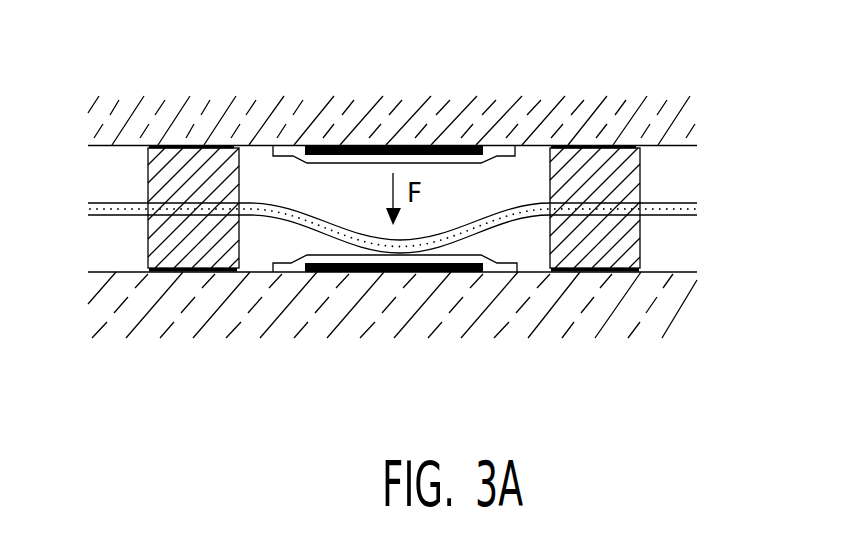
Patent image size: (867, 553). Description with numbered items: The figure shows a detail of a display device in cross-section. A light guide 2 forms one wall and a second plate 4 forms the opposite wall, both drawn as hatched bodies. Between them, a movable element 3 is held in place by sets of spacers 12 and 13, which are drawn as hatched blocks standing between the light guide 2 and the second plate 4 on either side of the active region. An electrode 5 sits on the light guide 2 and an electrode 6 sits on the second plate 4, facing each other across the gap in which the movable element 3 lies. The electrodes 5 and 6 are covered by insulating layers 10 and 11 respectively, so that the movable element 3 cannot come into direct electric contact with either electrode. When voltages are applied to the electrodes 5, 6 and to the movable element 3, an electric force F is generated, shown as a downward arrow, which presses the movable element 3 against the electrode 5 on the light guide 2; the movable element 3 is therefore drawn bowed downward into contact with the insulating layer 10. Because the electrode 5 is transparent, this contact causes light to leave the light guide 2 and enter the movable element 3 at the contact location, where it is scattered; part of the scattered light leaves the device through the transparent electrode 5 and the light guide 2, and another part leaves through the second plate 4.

The light guide 2 is at (223, 322).
The movable element 3 is at (672, 203).
The second plate 4 is at (198, 122).
The electrode 5 is at (337, 273).
The electrode 6 is at (323, 145).
The insulating layer 10 is at (502, 273).
The insulating layer 11 is at (500, 148).
The spacers 12 is at (590, 168).
The spacers 13 is at (603, 273).